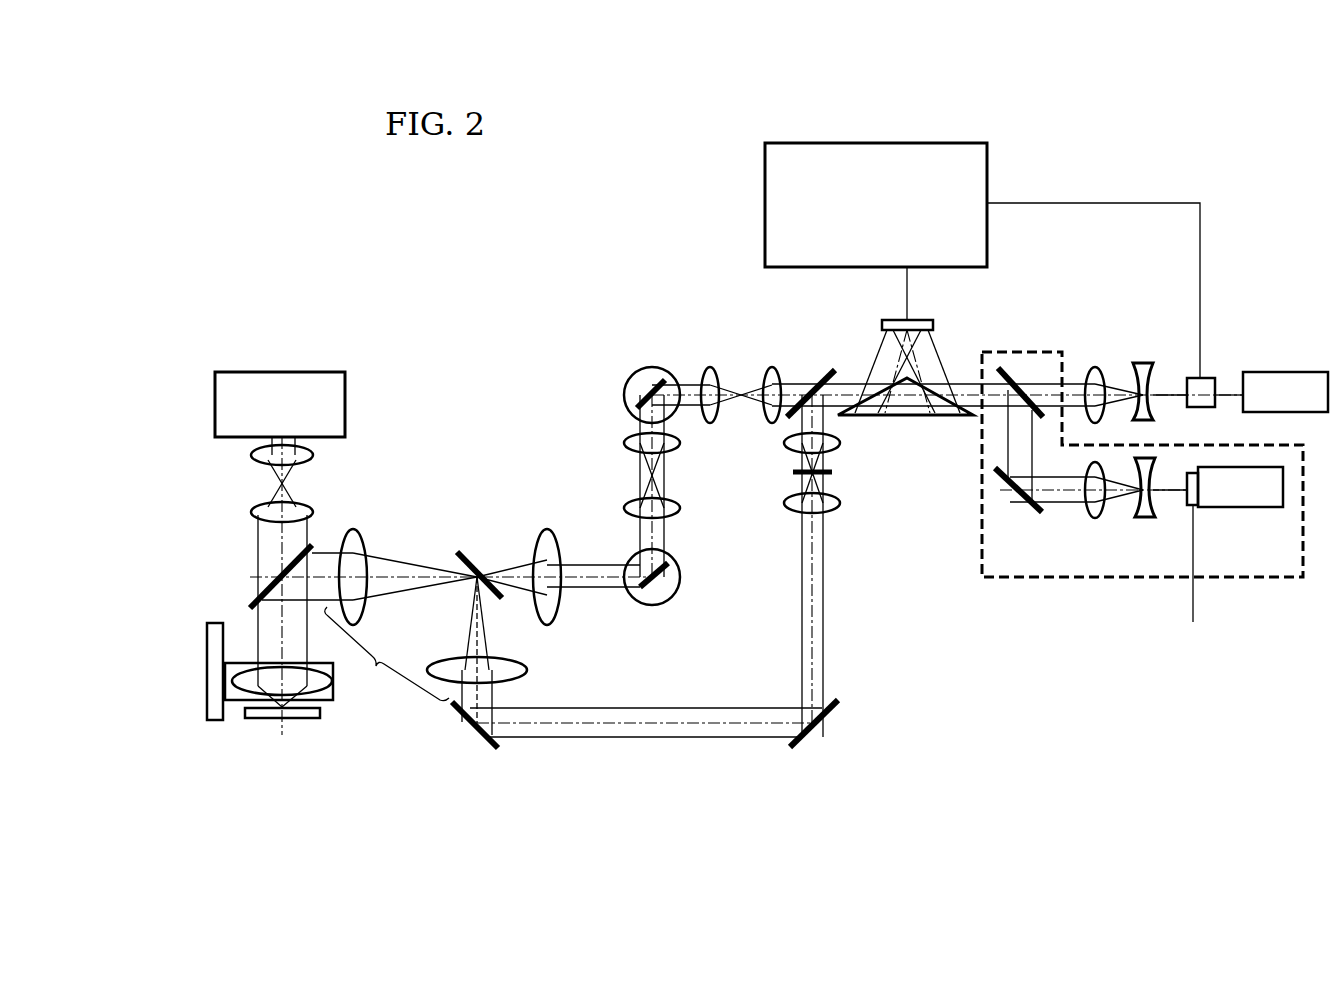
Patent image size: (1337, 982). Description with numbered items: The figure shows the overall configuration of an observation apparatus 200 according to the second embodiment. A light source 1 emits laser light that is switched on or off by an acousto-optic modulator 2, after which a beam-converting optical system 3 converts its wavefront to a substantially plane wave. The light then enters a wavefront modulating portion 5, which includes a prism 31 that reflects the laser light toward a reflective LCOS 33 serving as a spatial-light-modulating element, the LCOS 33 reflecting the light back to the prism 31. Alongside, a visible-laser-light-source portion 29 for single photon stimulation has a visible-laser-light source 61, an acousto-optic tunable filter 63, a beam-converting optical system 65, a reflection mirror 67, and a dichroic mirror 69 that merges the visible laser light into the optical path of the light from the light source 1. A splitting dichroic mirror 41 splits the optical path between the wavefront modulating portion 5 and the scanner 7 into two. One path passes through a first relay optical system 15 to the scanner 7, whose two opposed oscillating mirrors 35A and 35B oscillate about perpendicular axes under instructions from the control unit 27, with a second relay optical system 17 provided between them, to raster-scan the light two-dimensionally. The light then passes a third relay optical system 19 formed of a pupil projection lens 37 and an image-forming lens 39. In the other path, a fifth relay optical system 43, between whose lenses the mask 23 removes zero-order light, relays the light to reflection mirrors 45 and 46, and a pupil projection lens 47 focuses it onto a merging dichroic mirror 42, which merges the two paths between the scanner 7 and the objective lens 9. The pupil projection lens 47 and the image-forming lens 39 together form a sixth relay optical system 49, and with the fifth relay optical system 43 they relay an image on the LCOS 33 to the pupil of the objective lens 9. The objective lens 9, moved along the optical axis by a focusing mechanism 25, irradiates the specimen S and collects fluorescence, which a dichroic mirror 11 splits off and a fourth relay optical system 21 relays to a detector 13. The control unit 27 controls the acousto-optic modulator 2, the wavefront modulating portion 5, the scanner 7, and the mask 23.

The observation apparatus 200 is at (1040, 115).
The light source 1 is at (1313, 413).
The acousto-optic modulator 2 is at (1205, 378).
The beam-converting optical system 3 is at (1078, 361).
The wavefront modulating portion 5 is at (903, 447).
The scanner 7 is at (620, 360).
The objective lens 9 is at (334, 690).
The dichroic mirror 11 is at (255, 602).
The detector 13 is at (280, 372).
The first relay optical system 15 is at (788, 366).
The second relay optical system 17 is at (682, 432).
The third relay optical system 19 is at (333, 526).
The fourth relay optical system 21 is at (248, 445).
The mask 23 is at (790, 475).
The focusing mechanism 25 is at (215, 722).
The control unit 27 is at (875, 143).
The visible-laser-light-source portion 29 is at (1040, 578).
The prism 31 is at (945, 417).
The LCOS 33 is at (882, 322).
The oscillating mirror 35A is at (652, 367).
The oscillating mirror 35B is at (652, 605).
The pupil projection lens 37 is at (560, 615).
The image-forming lens 39 is at (365, 610).
The splitting dichroic mirror 41 is at (818, 372).
The merging dichroic mirror 42 is at (470, 556).
The fifth relay optical system 43 is at (842, 425).
The reflection mirror 45 is at (822, 720).
The reflection mirror 46 is at (482, 738).
The pupil projection lens 47 is at (527, 668).
The sixth relay optical system 49 is at (387, 654).
The visible-laser-light source 61 is at (1243, 508).
The acousto-optic tunable filter 63 is at (1188, 507).
The beam-converting optical system 65 is at (1163, 514).
The reflection mirror 67 is at (1015, 492).
The dichroic mirror 69 is at (1015, 383).
The specimen S is at (310, 720).